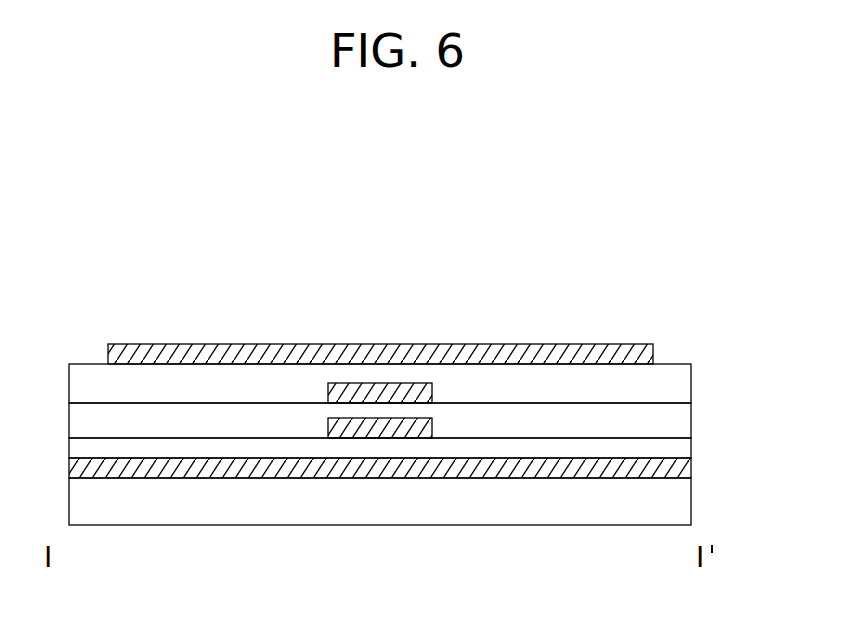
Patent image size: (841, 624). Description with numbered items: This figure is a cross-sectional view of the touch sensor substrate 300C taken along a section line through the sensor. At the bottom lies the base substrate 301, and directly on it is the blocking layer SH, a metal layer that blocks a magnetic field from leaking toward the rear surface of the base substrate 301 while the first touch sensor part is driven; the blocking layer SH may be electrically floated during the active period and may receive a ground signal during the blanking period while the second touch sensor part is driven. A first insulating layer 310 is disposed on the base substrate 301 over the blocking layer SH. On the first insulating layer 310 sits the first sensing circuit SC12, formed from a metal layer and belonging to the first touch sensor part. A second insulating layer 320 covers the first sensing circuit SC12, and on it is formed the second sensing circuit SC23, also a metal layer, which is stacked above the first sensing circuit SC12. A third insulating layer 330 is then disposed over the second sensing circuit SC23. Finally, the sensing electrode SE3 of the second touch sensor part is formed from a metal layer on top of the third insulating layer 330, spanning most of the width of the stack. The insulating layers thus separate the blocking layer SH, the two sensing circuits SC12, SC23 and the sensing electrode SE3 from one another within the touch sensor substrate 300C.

The touch sensor substrate 300C is at (424, 280).
The sensing electrode SE3 is at (527, 352).
The third insulating layer 330 is at (687, 383).
The second insulating layer 320 is at (687, 422).
The first insulating layer 310 is at (687, 448).
The blocking layer SH is at (520, 468).
The base substrate 301 is at (687, 502).
The second sensing circuit SC23 is at (328, 398).
The first sensing circuit SC12 is at (378, 430).